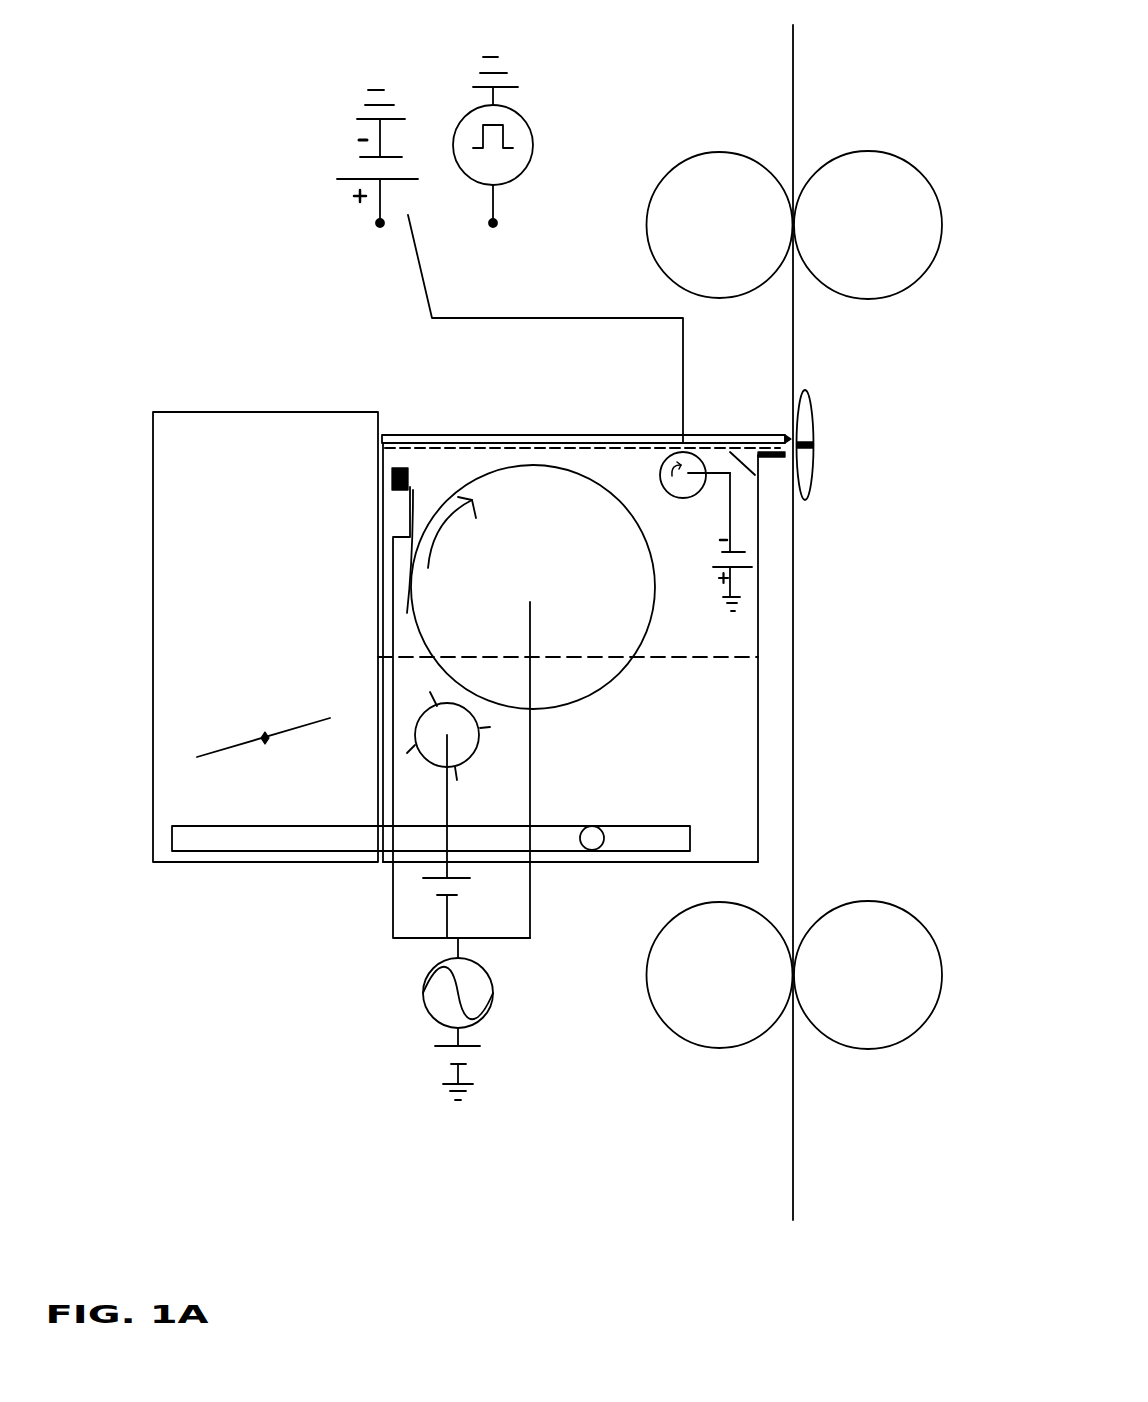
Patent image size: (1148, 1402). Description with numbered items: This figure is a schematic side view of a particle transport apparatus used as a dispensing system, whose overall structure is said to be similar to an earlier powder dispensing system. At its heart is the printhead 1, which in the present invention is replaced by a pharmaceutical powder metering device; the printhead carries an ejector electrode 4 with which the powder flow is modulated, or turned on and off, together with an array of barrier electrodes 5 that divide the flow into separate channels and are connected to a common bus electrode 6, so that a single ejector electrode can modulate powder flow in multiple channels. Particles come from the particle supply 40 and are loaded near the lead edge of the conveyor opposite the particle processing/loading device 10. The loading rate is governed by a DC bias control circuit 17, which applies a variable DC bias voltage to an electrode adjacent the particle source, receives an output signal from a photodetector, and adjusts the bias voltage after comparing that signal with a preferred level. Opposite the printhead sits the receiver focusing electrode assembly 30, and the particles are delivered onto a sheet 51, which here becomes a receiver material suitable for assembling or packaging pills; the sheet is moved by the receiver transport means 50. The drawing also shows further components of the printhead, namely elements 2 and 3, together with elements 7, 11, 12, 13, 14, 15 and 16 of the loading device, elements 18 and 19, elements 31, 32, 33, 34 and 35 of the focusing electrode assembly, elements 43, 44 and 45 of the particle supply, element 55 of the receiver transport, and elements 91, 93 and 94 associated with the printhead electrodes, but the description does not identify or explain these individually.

The printhead 1 is at (586, 386).
The substrate of print head 2 is at (586, 391).
The aperture electrode layer 3 is at (586, 391).
The ejector electrode 4 is at (685, 448).
The barrier electrodes 5 is at (586, 391).
The common bus electrode 6 is at (605, 447).
The toner 7 is at (265, 637).
The particle processing/loading device 10 is at (429, 1081).
The toner carrier roller 11 is at (567, 628).
The doctor blade 12 is at (412, 500).
The supply roller 13 is at (465, 762).
The recovery roller 14 is at (681, 502).
The rotation direction of recovery roller 15 is at (690, 497).
The developing chamber 16 is at (758, 705).
The DC bias control circuit 17 is at (455, 1038).
The DC power source 18 is at (720, 563).
The DC power source 19 is at (460, 890).
The receiver focusing electrode assembly 30 is at (833, 416).
The back electrode roller 31 is at (807, 420).
The back electrode lower portion 32 is at (812, 452).
The back electrode contact 33 is at (815, 445).
The back electrode support 34 is at (783, 453).
The print head edge 35 is at (783, 437).
The particle supply 40 is at (265, 558).
The agitator 43 is at (300, 725).
The toner conveying member 44 is at (318, 837).
The conveying screw 45 is at (593, 850).
The receiver transport means 50 is at (703, 992).
The sheet 51 is at (792, 1150).
The discharge roller pair 55 is at (858, 213).
The electrode lead 91 is at (428, 275).
The DC power source 93 is at (365, 170).
The pulse power source 94 is at (532, 130).